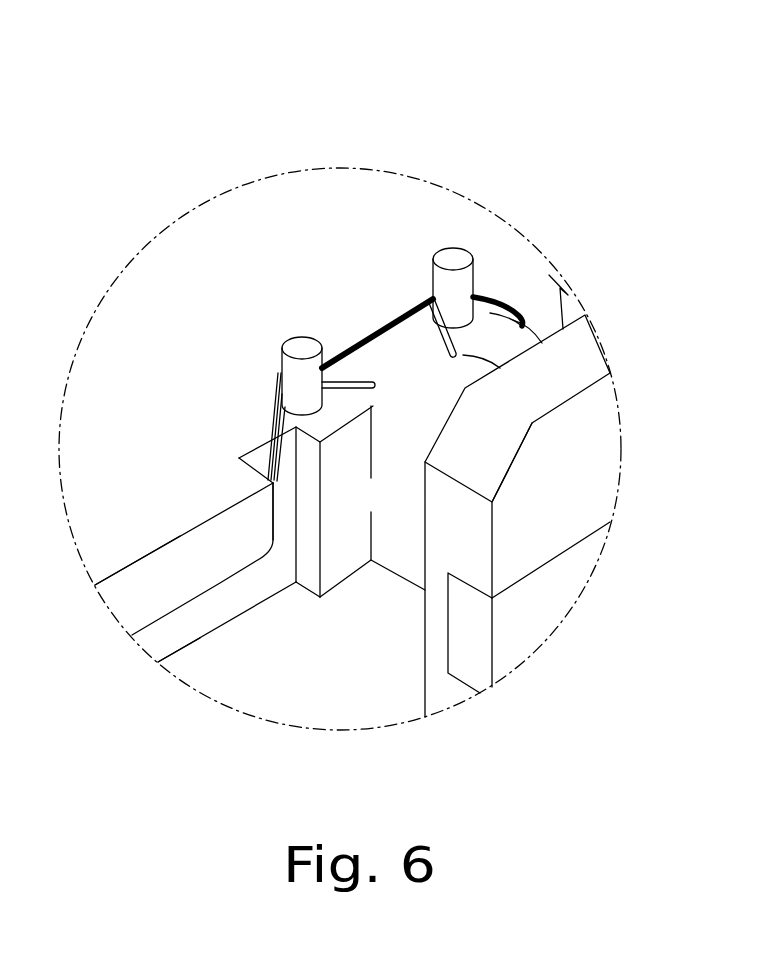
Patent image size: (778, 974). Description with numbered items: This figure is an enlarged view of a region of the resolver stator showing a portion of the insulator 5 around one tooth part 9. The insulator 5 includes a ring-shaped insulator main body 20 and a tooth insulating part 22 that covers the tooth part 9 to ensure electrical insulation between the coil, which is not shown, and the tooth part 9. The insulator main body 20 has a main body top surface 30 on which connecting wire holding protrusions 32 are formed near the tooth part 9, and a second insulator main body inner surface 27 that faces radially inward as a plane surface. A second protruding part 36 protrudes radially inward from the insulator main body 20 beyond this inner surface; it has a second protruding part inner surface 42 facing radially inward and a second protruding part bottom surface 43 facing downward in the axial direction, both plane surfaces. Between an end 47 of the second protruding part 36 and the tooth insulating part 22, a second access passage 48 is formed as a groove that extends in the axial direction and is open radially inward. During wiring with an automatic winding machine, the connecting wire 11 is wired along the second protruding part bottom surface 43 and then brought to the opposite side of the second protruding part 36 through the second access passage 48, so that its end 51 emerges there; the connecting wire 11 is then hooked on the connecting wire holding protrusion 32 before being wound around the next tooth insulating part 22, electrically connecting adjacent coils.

The insulator 5 is at (393, 240).
The tooth part 9 is at (547, 620).
The connecting wire 11 is at (360, 375).
The insulator main body 20 is at (217, 461).
The tooth insulating part 22 is at (406, 538).
The second insulator main body inner surface 27 is at (182, 633).
The main body top surface 30 is at (279, 482).
The connecting wire holding protrusion 32 is at (294, 348).
The second protruding part 36 is at (237, 557).
The second protruding part inner surface 42 is at (170, 569).
The second protruding part bottom surface 43 is at (148, 627).
The end of the second protruding part 47 is at (270, 532).
The second access passage 48 is at (285, 493).
The end of the connecting wire 51 is at (267, 425).